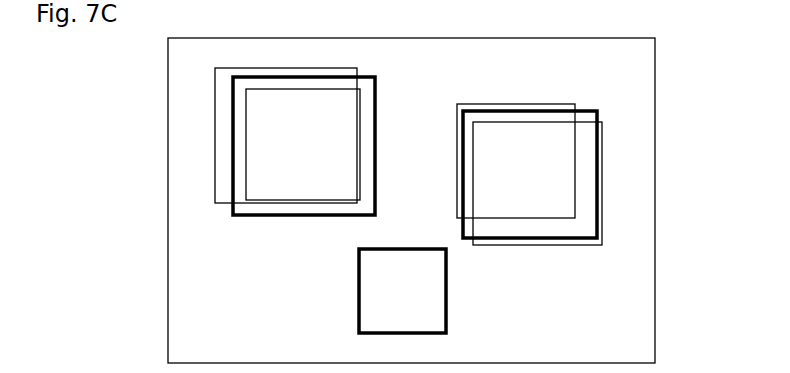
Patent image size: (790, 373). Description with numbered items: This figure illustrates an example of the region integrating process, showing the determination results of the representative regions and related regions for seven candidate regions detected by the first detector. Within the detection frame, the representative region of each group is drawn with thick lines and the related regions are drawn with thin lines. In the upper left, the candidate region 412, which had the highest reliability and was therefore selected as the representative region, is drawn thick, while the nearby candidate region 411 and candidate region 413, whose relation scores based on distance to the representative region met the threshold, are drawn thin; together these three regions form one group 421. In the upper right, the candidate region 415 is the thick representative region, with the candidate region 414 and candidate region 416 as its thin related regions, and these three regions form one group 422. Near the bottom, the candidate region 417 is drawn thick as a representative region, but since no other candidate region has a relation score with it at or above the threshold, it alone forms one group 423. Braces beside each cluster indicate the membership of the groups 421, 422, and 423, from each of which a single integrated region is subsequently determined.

The candidate region 411 is at (215, 85).
The candidate region 412 is at (233, 120).
The candidate region 413 is at (246, 165).
The candidate region 414 is at (575, 145).
The candidate region 415 is at (597, 170).
The candidate region 416 is at (602, 200).
The candidate region 417 is at (447, 301).
The group 421 is at (170, 165).
The group 422 is at (652, 115).
The group 423 is at (496, 280).